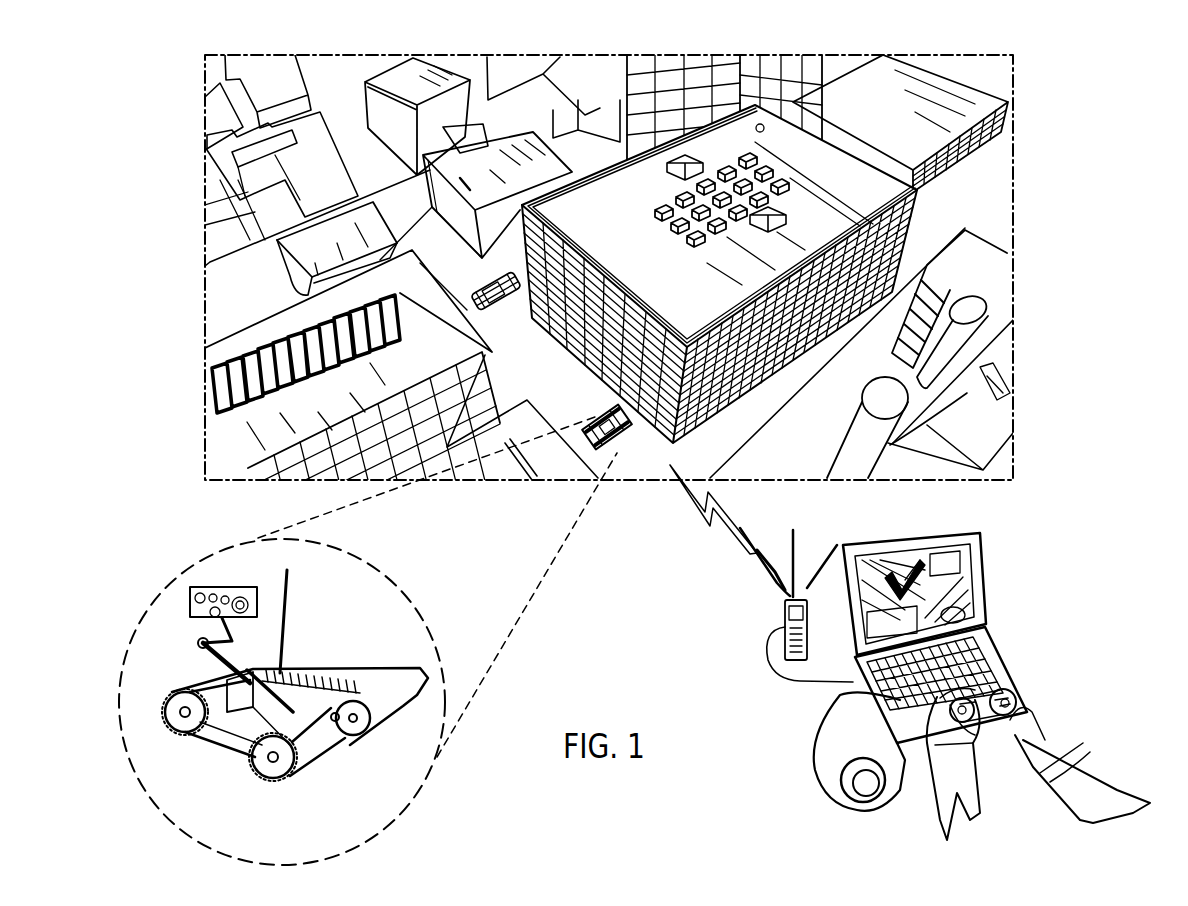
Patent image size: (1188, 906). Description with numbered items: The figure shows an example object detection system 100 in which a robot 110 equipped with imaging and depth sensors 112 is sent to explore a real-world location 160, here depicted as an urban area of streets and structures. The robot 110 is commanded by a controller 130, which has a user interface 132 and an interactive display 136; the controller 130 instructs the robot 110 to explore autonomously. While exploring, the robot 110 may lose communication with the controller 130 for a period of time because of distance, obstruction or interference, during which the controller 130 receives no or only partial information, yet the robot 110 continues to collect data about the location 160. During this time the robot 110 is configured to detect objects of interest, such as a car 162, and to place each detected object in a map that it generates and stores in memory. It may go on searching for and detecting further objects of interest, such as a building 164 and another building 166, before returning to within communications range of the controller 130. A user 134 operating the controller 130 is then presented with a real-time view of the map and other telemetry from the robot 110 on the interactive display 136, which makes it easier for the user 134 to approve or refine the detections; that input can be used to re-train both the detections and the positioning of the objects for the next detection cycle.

The object detection system 100 is at (128, 478).
The robot 110 is at (370, 588).
The imaging and depth sensors 112 is at (190, 601).
The controller 130 is at (945, 661).
The user interface 132 is at (1036, 690).
The user 134 is at (1078, 756).
The interactive display 136 is at (942, 552).
The real-world location 160 is at (207, 268).
The car 162 is at (493, 288).
The building 164 is at (210, 341).
The building 166 is at (738, 128).